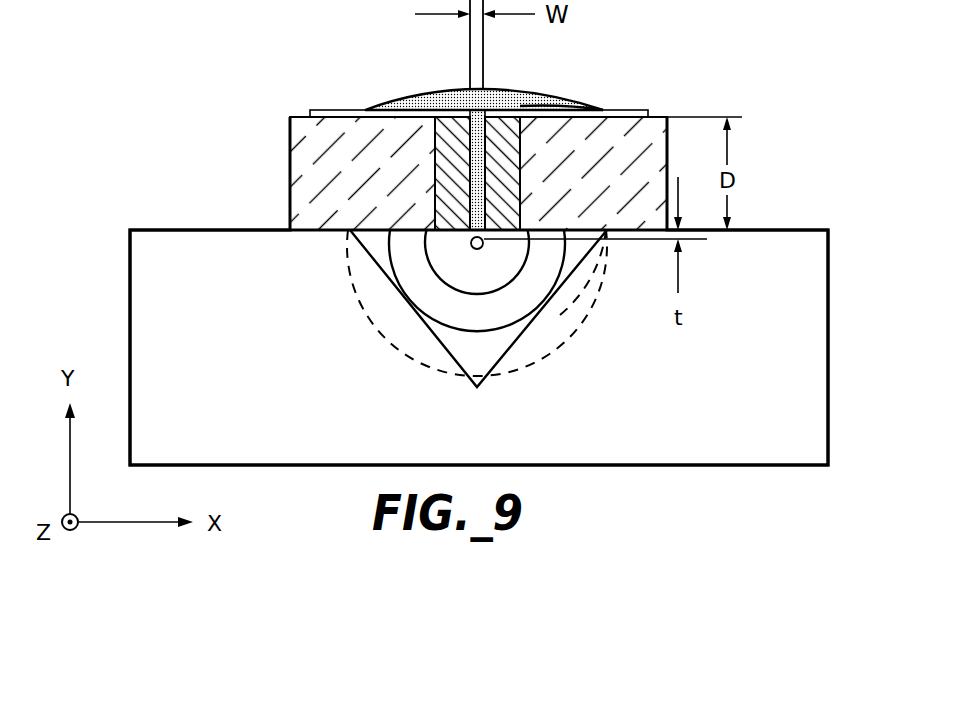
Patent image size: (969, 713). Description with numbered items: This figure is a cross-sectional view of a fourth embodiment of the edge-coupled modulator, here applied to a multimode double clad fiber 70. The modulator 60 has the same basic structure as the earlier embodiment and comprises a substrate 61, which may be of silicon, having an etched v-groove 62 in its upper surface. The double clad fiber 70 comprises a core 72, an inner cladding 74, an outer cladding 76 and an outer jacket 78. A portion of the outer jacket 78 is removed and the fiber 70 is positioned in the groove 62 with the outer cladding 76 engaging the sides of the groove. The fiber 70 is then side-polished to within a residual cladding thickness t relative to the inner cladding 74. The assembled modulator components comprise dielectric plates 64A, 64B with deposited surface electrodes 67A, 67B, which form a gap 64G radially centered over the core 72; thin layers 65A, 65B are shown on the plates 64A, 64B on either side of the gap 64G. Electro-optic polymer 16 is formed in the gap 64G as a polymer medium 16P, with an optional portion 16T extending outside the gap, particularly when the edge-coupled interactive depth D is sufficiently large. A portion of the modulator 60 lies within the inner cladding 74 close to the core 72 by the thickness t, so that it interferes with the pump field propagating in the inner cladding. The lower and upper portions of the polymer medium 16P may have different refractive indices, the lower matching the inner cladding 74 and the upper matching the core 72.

The modulator 60 is at (767, 38).
The substrate 61 is at (758, 237).
The v-groove 62 is at (457, 350).
The electro-optic polymer 16 is at (467, 90).
The polymer medium 16P is at (490, 95).
The portion extending outside the gap 16T is at (545, 105).
The dielectric plate 64A is at (296, 152).
The dielectric plate 64B is at (660, 122).
The gap 64G is at (478, 160).
The first thin layer 65A is at (316, 112).
The second thin layer 65B is at (645, 108).
The surface electrode 67A is at (452, 163).
The surface electrode 67B is at (507, 162).
The double clad fiber 70 is at (355, 302).
The core 72 is at (476, 250).
The inner cladding 74 is at (503, 259).
The outer cladding 76 is at (540, 283).
The outer jacket 78 is at (565, 328).